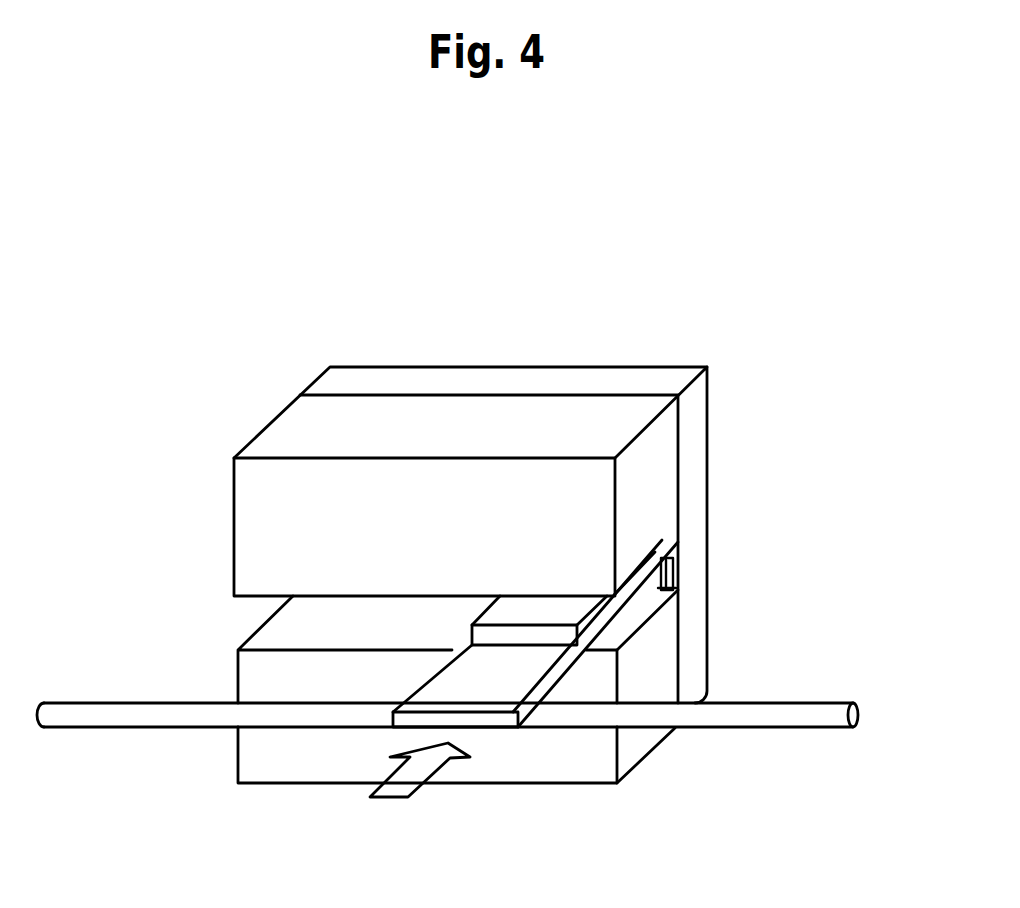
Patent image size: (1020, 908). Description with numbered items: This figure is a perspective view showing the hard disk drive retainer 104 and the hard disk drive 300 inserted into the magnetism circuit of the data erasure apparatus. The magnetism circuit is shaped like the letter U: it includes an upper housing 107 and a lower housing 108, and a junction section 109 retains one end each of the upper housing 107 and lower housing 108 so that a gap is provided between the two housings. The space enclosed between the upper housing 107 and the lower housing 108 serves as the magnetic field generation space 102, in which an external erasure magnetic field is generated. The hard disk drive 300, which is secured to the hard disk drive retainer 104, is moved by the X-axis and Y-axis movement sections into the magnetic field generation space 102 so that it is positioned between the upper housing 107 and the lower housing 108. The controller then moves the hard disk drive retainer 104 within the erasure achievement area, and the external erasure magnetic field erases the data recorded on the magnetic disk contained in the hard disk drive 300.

The hard disk drive 300 is at (541, 612).
The upper housing 107 is at (647, 480).
The junction section 109 is at (693, 553).
The magnetic field generation space 102 is at (672, 585).
The lower housing 108 is at (653, 648).
The hard disk drive retainer 104 is at (648, 588).